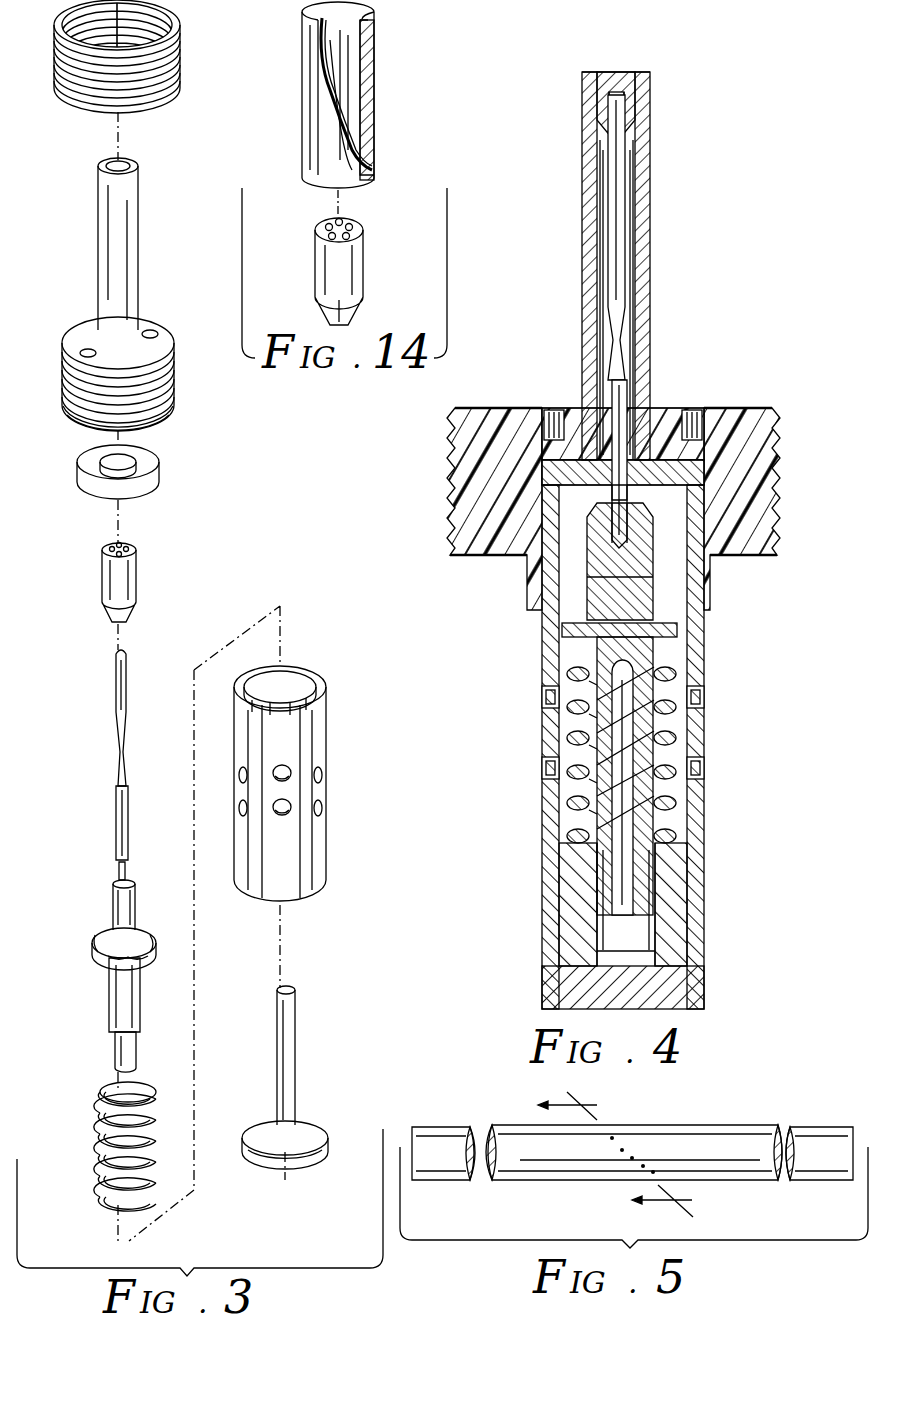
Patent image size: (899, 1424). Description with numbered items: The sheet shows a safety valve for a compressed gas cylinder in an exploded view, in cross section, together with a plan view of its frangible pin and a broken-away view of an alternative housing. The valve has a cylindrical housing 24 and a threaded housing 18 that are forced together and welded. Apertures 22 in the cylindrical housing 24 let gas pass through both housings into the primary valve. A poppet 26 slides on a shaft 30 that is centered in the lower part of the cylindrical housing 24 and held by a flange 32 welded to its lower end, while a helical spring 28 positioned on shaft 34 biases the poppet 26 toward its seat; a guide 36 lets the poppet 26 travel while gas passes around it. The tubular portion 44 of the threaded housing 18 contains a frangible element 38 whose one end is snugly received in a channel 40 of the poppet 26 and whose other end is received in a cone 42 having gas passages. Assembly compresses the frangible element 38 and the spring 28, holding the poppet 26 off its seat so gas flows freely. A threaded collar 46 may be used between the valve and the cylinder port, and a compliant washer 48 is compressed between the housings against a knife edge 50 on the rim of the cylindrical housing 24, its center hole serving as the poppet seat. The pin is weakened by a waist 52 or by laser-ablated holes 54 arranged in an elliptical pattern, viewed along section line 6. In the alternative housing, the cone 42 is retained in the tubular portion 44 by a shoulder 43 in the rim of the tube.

In FIG. 5, the section line 6- 6 is at (626, 1154).
In FIG. 3, the threaded housing 18 is at (172, 372).
In FIG. 3, the apertures 22 is at (322, 776).
In FIG. 4, the apertures 22 is at (546, 766).
In FIG. 3, the cylindrical housing 24 is at (304, 773).
In FIG. 4, the cylindrical housing 24 is at (615, 747).
In FIG. 3, the poppet 26 is at (140, 1000).
In FIG. 4, the poppet 26 is at (683, 680).
In FIG. 3, the helical spring 28 is at (140, 1092).
In FIG. 4, the helical spring 28 is at (680, 800).
In FIG. 3, the shaft 30 is at (296, 1040).
In FIG. 4, the shaft 30 is at (597, 906).
In FIG. 3, the flange 32 is at (322, 1128).
In FIG. 4, the flange 32 is at (704, 990).
In FIG. 3, the shaft 34 is at (136, 1046).
In FIG. 3, the guide 36 is at (138, 932).
In FIG. 4, the guide 36 is at (670, 626).
In FIG. 3, the frangible element 38 is at (128, 810).
In FIG. 4, the frangible element 38 is at (630, 402).
In FIG. 5, the frangible element 38 is at (742, 1128).
In FIG. 3, the channel 40 is at (125, 880).
In FIG. 4, the channel 40 is at (636, 416).
In FIG. 3, the cone 42 is at (136, 586).
In FIG. 14, the cone 42 is at (316, 258).
In FIG. 4, the cone 42 is at (622, 80).
In FIG. 14, the shoulder 43 is at (356, 40).
In FIG. 3, the tubular portion 44 is at (133, 262).
In FIG. 14, the tubular portion 44 is at (317, 95).
In FIG. 4, the tubular portion 44 is at (652, 220).
In FIG. 3, the collar 46 is at (180, 62).
In FIG. 4, the collar 46 is at (764, 392).
In FIG. 3, the washer 48 is at (152, 460).
In FIG. 4, the washer 48 is at (560, 462).
In FIG. 3, the knife edge 50 is at (322, 672).
In FIG. 4, the knife edge 50 is at (688, 485).
In FIG. 3, the waist 52 is at (124, 746).
In FIG. 4, the waist 52 is at (620, 352).
In FIG. 5, the holes 54 is at (640, 1150).